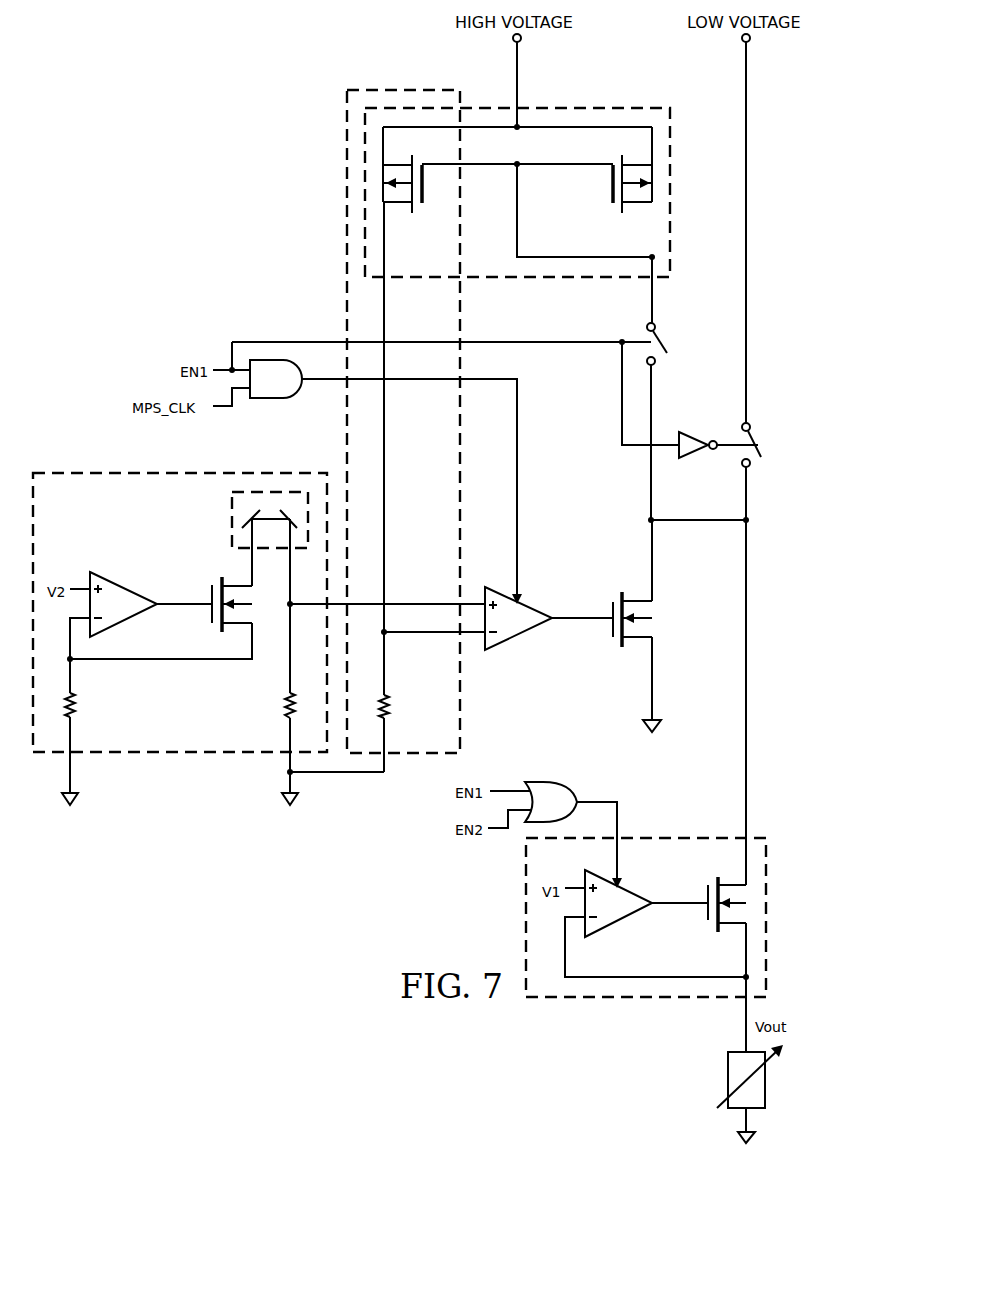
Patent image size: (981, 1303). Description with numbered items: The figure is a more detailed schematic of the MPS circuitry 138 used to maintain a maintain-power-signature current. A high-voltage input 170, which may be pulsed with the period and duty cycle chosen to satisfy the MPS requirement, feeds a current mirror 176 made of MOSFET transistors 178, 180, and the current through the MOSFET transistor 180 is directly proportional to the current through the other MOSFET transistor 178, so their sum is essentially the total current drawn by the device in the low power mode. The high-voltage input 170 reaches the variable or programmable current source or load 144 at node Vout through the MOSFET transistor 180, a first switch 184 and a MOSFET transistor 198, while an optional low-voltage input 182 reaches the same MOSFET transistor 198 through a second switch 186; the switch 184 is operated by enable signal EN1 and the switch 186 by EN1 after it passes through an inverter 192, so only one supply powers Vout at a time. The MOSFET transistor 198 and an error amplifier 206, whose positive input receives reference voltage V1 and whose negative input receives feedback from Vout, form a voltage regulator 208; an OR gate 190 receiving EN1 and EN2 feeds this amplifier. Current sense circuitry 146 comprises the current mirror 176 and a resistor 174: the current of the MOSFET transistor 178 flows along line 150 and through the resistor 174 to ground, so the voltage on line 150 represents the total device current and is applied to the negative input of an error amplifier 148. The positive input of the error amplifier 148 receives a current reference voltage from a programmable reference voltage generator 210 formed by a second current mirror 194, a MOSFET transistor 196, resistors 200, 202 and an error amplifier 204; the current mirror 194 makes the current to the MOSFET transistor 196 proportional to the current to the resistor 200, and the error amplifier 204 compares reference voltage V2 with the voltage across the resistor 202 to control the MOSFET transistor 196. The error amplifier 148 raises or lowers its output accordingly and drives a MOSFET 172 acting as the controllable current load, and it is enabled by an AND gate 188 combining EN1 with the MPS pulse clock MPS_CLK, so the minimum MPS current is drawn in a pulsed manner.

The MPS circuitry 138 is at (193, 135).
The variable or programmable current source or load 144 is at (727, 1080).
The current sense or monitor circuitry 146 is at (341, 316).
The error amplifier 148 is at (518, 638).
The line 150 is at (386, 505).
The high-voltage input 170 is at (513, 40).
The MOSFET 172 is at (610, 608).
The resistor 174 is at (388, 707).
The current mirror 176 is at (625, 104).
The MOSFET transistor 178 is at (428, 205).
The MOSFET transistor 180 is at (611, 195).
The low-voltage input 182 is at (751, 40).
The switch 184 is at (665, 336).
The switch 186 is at (758, 438).
The AND gate 188 is at (270, 400).
The OR gate 190 is at (547, 780).
The inverter 192 is at (695, 455).
The second current mirror 194 is at (233, 520).
The MOSFET transistor 196 is at (205, 613).
The MOSFET transistor 198 is at (706, 893).
The resistor 200 is at (284, 708).
The resistor 202 is at (73, 705).
The error amplifier 204 is at (125, 583).
The error amplifier 206 is at (618, 923).
The voltage regulator 208 is at (573, 1002).
The programmable reference voltage generator 210 is at (73, 465).